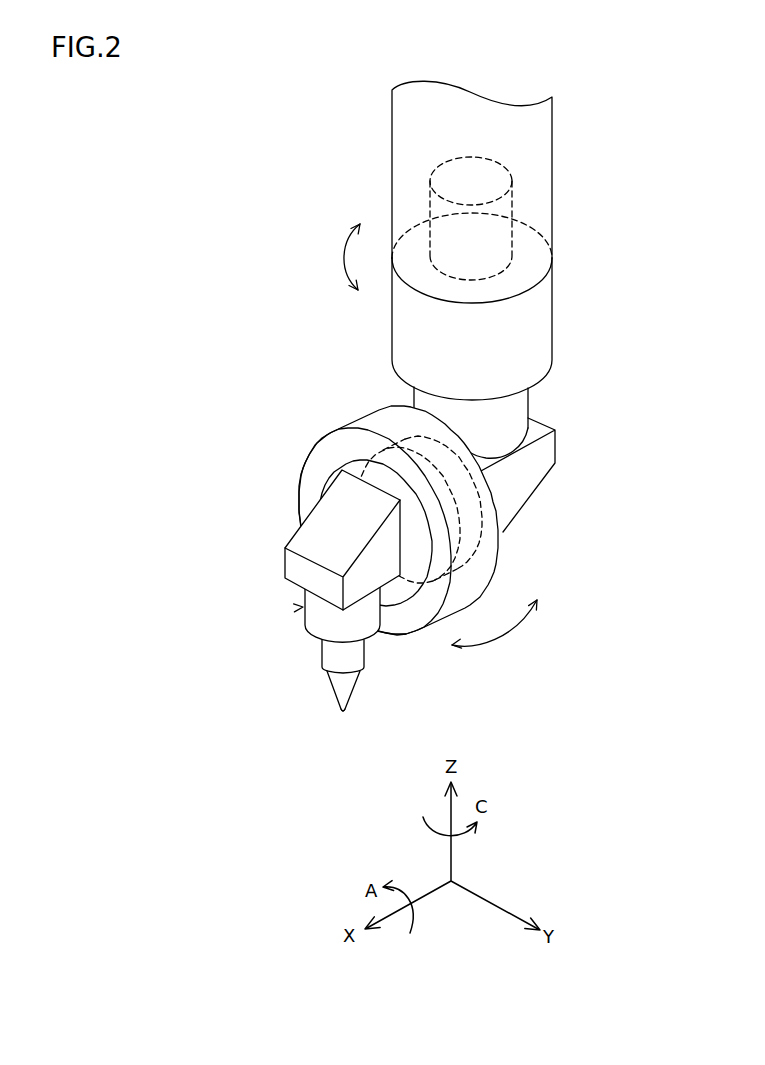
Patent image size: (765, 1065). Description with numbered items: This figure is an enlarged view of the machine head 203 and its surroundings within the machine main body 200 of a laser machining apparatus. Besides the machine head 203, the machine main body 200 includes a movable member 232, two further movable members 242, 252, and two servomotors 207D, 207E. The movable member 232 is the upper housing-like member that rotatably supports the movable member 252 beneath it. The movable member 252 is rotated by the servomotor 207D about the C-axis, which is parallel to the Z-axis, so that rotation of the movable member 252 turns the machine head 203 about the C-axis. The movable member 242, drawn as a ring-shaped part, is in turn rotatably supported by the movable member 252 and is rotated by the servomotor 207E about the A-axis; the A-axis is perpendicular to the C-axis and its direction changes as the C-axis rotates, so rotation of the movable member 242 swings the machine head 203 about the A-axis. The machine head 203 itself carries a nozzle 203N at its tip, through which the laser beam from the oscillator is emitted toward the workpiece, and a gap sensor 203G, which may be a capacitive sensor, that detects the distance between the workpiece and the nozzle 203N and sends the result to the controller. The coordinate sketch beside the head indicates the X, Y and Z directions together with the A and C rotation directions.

The machine main body 200 is at (170, 83).
The movable member 232 is at (390, 166).
The servomotor 207E is at (513, 203).
The movable member 252 is at (553, 320).
The movable member 242 is at (374, 424).
The servomotor 207D is at (475, 515).
The machine head 203 is at (302, 607).
The nozzle 203N is at (327, 685).
The gap sensor 203G is at (343, 713).